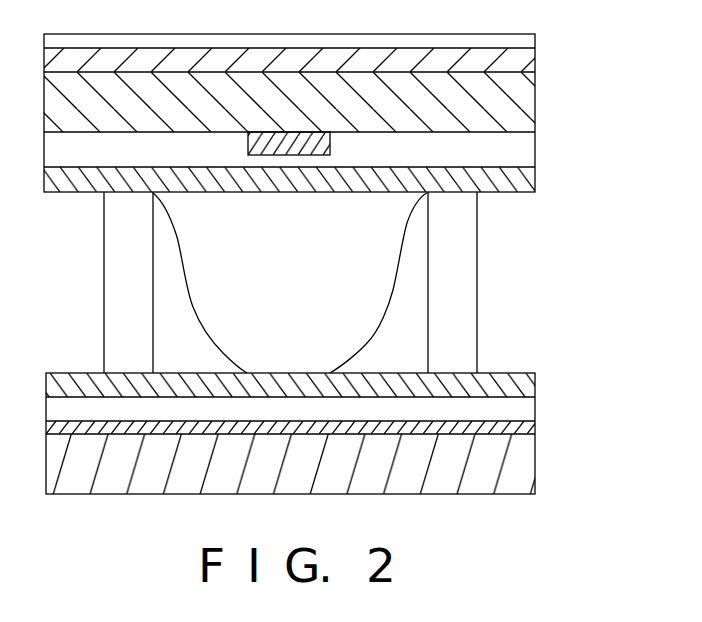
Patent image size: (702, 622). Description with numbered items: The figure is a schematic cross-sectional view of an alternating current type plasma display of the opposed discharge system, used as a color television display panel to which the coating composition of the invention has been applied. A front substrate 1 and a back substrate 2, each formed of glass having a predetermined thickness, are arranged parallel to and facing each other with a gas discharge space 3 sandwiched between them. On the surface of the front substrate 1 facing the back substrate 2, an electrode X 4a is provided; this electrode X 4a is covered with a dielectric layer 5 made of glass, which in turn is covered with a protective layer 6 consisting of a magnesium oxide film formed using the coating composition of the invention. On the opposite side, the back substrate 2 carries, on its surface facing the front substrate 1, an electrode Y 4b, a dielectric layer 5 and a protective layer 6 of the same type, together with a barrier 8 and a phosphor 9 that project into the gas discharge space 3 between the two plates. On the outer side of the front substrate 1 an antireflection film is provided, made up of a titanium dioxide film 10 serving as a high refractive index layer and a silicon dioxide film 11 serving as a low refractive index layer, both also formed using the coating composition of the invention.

The front substrate 1 is at (525, 100).
The back substrate 2 is at (522, 473).
The gas discharge space 3 is at (393, 235).
The electrode X 4a is at (330, 146).
The electrode Y 4b is at (527, 426).
The dielectric layer 5 is at (523, 152).
The protective layer 6 is at (523, 180).
The barrier 8 is at (462, 280).
The phosphor 9 is at (412, 327).
The titanium dioxide film 10 is at (525, 63).
The silicon dioxide film 11 is at (527, 42).